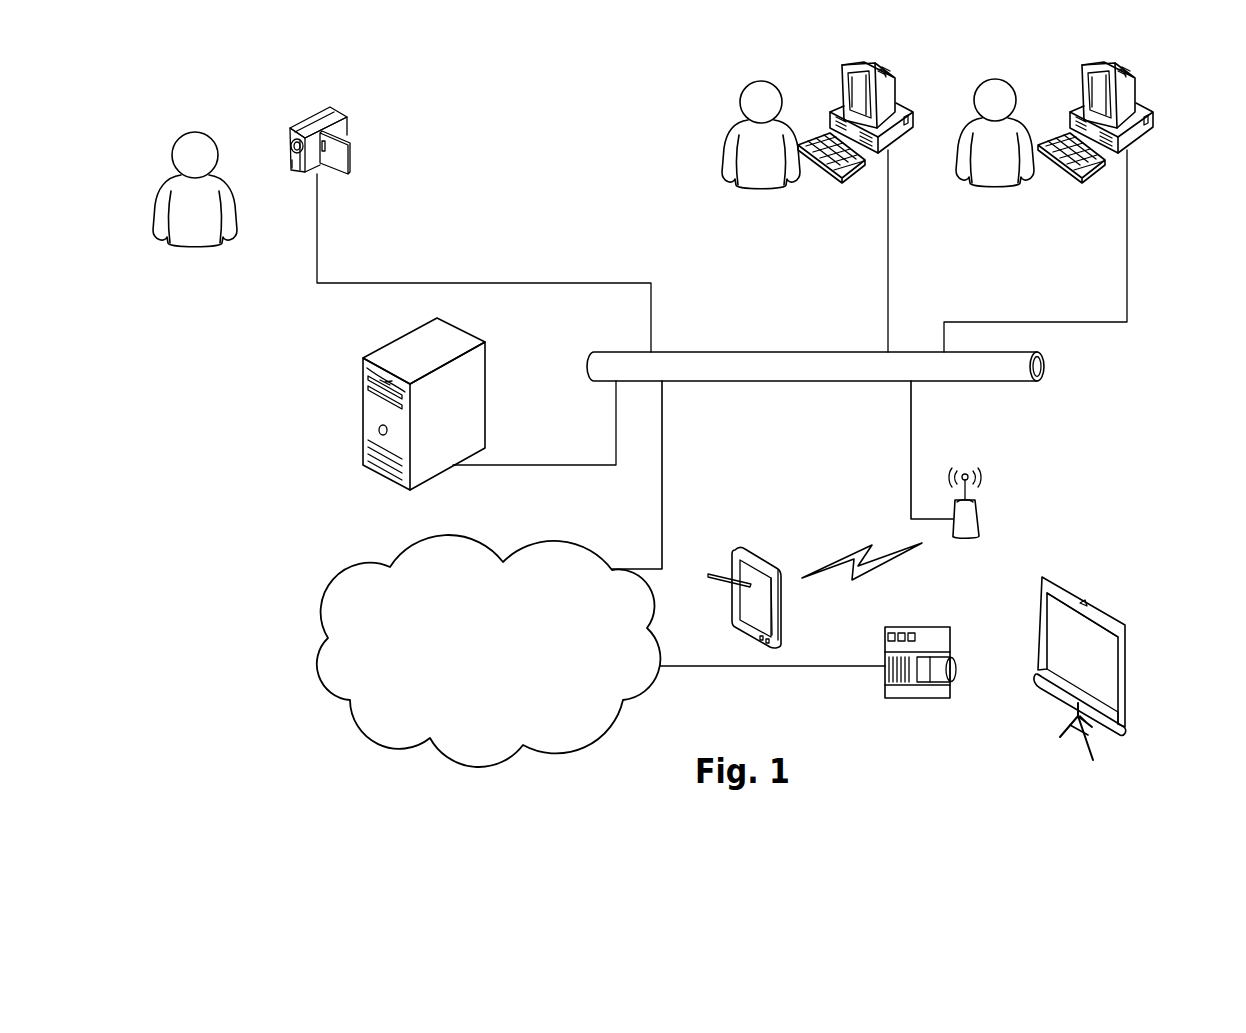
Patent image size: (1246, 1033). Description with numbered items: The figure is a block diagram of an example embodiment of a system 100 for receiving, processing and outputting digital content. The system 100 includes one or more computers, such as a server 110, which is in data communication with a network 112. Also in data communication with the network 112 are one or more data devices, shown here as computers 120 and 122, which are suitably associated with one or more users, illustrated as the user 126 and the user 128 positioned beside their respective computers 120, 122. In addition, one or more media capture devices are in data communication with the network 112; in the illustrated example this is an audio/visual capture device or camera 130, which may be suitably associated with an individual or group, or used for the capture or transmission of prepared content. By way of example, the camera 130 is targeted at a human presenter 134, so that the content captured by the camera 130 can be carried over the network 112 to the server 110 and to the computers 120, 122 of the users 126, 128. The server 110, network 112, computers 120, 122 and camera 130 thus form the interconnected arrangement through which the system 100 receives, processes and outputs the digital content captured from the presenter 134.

The system 100 is at (1126, 443).
The server 110 is at (483, 360).
The network 112 is at (725, 352).
The computer 120 is at (905, 96).
The computer 122 is at (1146, 97).
The user 126 is at (752, 180).
The user 128 is at (985, 180).
The camera 130 is at (352, 126).
The human presenter 134 is at (193, 246).